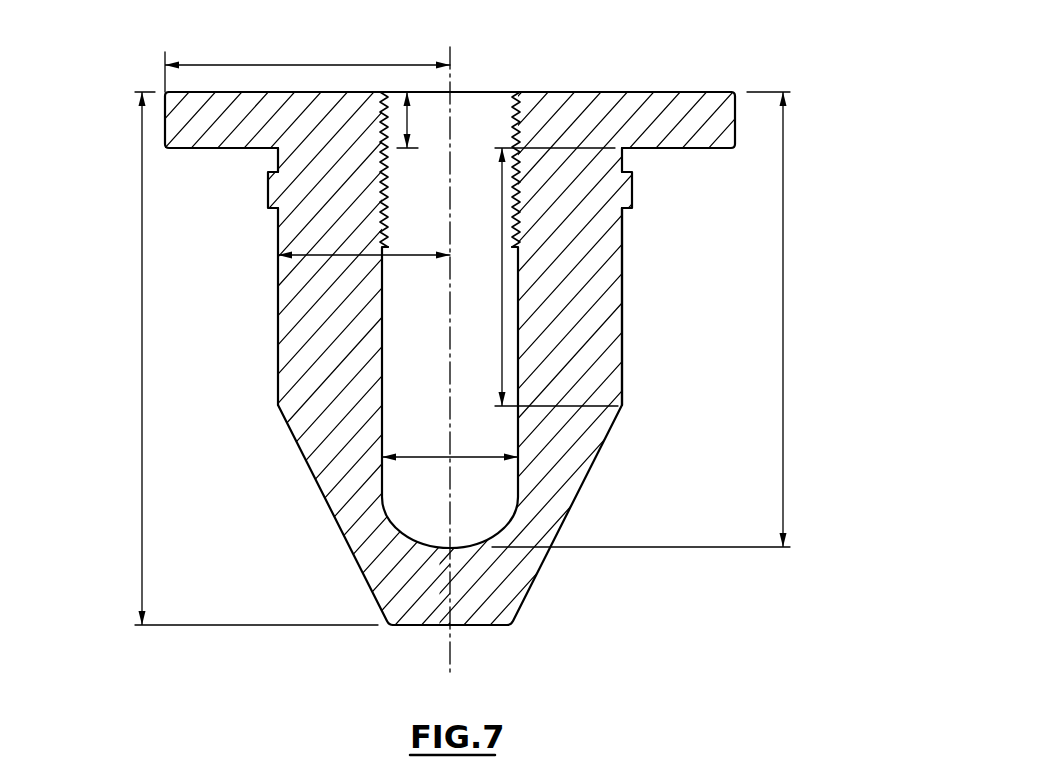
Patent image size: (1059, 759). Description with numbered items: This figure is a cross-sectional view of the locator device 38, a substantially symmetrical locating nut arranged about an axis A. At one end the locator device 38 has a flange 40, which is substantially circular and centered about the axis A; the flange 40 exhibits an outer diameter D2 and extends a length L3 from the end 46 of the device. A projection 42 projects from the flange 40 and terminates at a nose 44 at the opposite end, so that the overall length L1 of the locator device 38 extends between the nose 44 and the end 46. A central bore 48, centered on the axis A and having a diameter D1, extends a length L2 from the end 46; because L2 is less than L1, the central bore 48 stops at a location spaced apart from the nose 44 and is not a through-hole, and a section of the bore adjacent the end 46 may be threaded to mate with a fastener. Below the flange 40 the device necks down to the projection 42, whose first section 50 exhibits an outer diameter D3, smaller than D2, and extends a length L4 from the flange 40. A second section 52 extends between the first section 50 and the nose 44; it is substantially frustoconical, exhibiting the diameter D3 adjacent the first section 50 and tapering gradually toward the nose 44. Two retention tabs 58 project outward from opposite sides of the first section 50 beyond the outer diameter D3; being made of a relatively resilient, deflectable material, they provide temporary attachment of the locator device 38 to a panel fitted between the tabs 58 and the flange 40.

The locator device 38 is at (529, 343).
The flange 40 is at (703, 135).
The projection 42 is at (654, 322).
The nose 44 is at (484, 627).
The end 46 is at (572, 92).
The central bore 48 is at (428, 354).
The first section 50 is at (639, 362).
The second section 52 is at (609, 502).
The retention tabs 58 is at (267, 186).
The axis A is at (452, 657).
The diameter of the central bore D1 is at (432, 458).
The outer diameter of the flange D2 is at (281, 65).
The outer diameter of the first section D3 is at (393, 257).
The length of the locator device L1 is at (142, 417).
The length of the central bore L2 is at (783, 287).
The length of the flange L3 is at (410, 117).
The length of the first section L4 is at (499, 285).